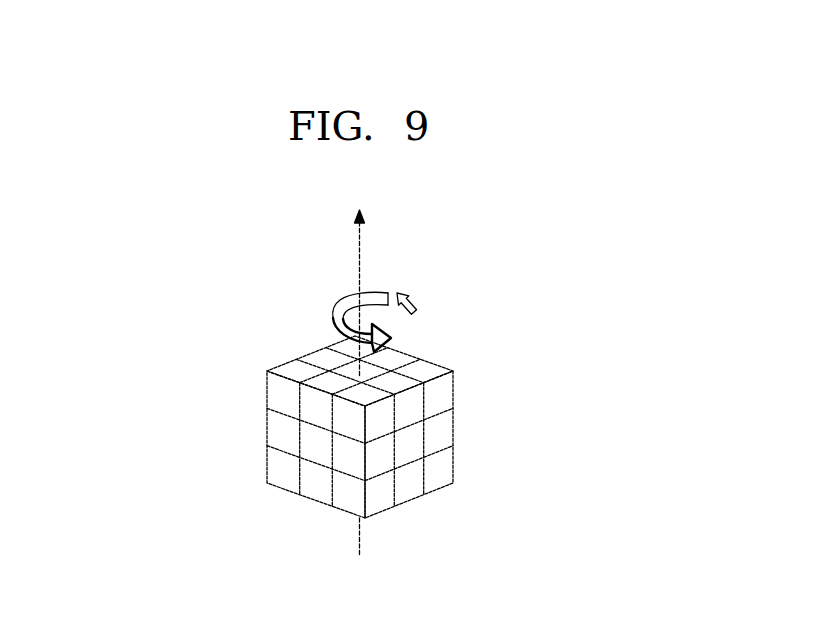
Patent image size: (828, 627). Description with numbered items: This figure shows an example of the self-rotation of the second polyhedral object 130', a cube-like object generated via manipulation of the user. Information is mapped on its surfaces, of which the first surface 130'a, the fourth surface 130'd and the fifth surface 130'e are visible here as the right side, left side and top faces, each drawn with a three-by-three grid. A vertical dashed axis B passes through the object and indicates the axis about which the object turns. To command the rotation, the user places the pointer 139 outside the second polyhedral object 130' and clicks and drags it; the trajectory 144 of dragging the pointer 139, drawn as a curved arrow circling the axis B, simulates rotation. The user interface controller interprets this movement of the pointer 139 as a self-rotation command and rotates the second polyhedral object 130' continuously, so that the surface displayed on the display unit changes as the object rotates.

The rotation axis B is at (363, 258).
The pointer 139 is at (415, 306).
The trajectory 144 is at (336, 318).
The second polyhedral object 130' is at (371, 443).
The fifth surface 130'e is at (410, 366).
The first surface 130'a is at (451, 453).
The fourth surface 130'd is at (275, 466).